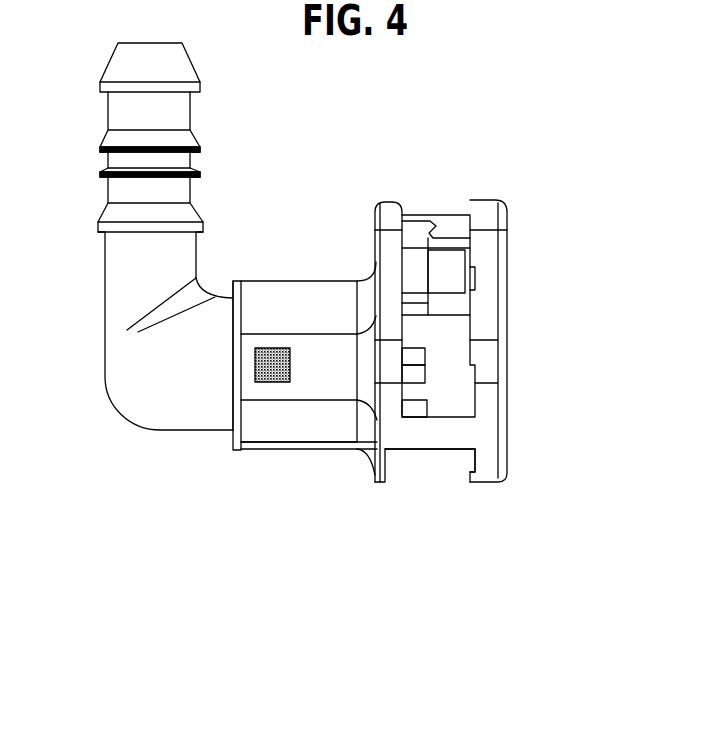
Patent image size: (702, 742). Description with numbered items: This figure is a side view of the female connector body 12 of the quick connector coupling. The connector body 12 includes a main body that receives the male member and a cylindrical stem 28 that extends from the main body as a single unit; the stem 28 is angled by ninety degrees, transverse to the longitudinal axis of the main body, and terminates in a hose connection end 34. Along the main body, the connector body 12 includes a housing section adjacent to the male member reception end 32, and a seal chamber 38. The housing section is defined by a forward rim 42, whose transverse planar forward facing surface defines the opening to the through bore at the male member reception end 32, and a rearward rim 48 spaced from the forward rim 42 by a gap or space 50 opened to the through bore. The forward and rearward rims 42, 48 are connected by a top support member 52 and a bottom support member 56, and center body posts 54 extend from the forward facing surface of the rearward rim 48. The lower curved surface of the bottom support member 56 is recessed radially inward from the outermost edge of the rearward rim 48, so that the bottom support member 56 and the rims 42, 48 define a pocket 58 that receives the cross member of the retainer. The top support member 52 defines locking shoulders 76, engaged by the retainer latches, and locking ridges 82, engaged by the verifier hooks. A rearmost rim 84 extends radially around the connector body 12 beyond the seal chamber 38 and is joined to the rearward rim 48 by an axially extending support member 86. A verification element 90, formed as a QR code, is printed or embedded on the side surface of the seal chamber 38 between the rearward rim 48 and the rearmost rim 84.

The female connector body 12 is at (440, 293).
The cylindrical stem 28 is at (137, 212).
The male member reception end 32 is at (509, 311).
The hose connection end 34 is at (187, 62).
The seal chamber 38 is at (280, 290).
The forward rim 42 is at (482, 213).
The rearward rim 48 is at (389, 220).
The gap or space 50 is at (456, 397).
The top support member 52 is at (425, 213).
The center body posts 54 is at (410, 373).
The bottom support member 56 is at (445, 440).
The pocket 58 is at (410, 462).
The locking shoulders 76 is at (447, 297).
The locking ridges 82 is at (418, 302).
The rearmost rim 84 is at (233, 410).
The support member 86 is at (289, 450).
The verification element 90 is at (271, 383).